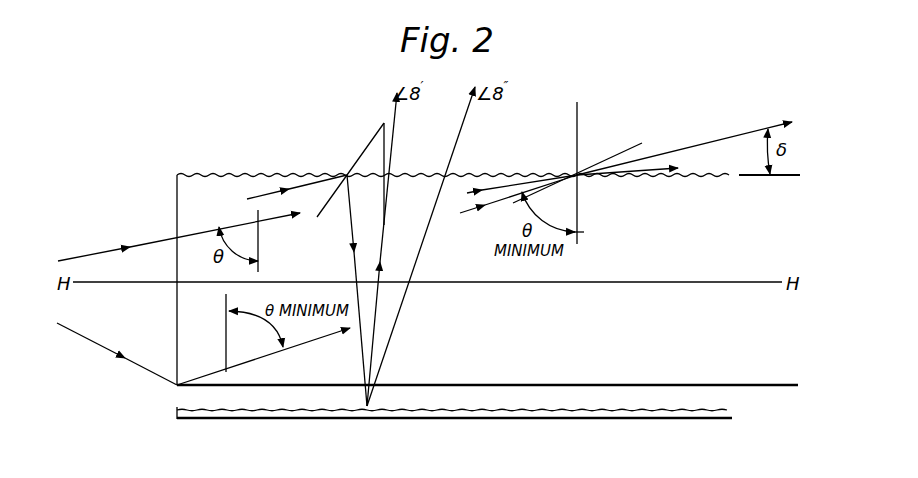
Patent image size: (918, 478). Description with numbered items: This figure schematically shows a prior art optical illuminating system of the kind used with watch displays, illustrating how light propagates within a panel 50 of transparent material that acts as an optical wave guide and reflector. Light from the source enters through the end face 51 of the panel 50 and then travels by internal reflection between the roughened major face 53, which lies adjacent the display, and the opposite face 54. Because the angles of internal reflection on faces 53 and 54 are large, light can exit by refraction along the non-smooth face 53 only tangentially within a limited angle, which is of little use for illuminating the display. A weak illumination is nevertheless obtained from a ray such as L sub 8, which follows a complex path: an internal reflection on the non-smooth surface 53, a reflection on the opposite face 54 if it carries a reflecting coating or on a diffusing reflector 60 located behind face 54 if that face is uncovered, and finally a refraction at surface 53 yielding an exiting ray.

The panel 50 is at (511, 363).
The end face 51 is at (175, 195).
The major face 53 is at (305, 175).
The opposite face 54 is at (723, 390).
The diffusing reflector 60 is at (206, 406).
The angle of incident ray 8 is at (202, 218).